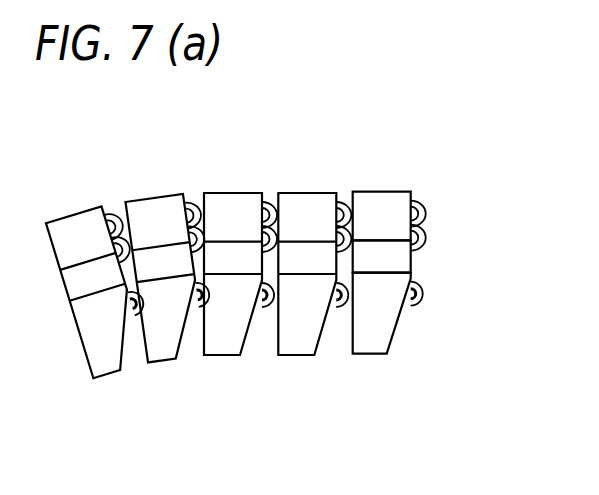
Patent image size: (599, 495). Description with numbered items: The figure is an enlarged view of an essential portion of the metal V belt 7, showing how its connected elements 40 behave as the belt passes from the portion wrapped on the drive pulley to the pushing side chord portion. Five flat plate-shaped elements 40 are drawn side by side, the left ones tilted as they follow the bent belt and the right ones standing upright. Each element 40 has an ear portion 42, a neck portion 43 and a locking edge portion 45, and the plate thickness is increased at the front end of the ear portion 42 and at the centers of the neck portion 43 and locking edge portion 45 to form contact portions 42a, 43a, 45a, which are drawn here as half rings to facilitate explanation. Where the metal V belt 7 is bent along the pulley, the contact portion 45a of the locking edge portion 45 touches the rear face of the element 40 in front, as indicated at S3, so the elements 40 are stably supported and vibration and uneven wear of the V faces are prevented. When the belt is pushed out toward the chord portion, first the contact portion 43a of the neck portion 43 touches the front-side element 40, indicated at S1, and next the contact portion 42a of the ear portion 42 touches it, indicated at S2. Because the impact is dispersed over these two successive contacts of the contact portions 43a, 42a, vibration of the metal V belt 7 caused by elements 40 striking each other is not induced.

The metal V belt 7 is at (272, 247).
The element 40 is at (423, 241).
The ear portion 42 is at (412, 194).
The contact portion 42a is at (423, 210).
The neck portion 43 is at (406, 261).
The contact portion 43a is at (423, 238).
The locking edge portion 45 is at (383, 281).
The contact portion 45a is at (422, 295).
The contact of neck portion contact portion S1 is at (214, 224).
The contact of ear portion contact portion S2 is at (285, 214).
The contact of locking edge contact portion S3 is at (149, 311).